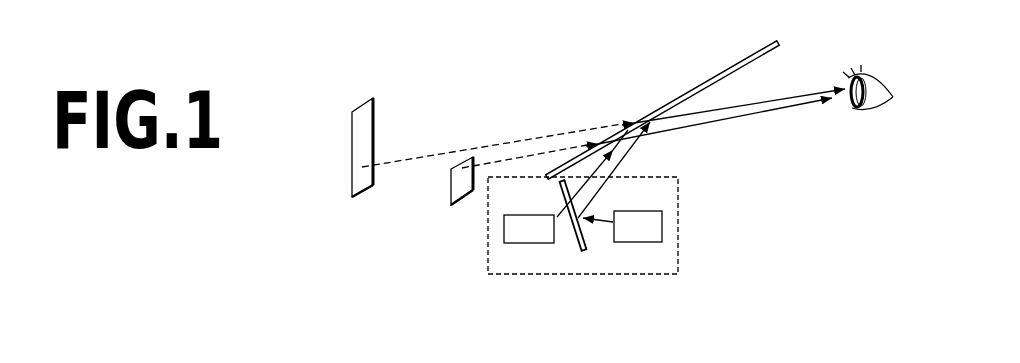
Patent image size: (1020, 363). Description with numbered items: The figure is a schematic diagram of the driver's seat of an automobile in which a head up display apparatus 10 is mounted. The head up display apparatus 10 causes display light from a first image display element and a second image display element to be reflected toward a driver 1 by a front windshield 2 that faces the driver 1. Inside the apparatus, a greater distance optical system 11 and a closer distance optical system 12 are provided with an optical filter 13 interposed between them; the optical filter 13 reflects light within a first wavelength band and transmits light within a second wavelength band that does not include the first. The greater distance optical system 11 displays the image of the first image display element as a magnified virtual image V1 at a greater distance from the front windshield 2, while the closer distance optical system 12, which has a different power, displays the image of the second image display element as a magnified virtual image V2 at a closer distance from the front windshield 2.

The driver 1 is at (878, 80).
The front windshield 2 is at (722, 70).
The head up display apparatus 10 is at (680, 191).
The greater distance optical system 11 is at (647, 243).
The closer distance optical system 12 is at (530, 243).
The optical filter 13 is at (577, 251).
The virtual image V1 is at (363, 197).
The virtual image V2 is at (463, 206).